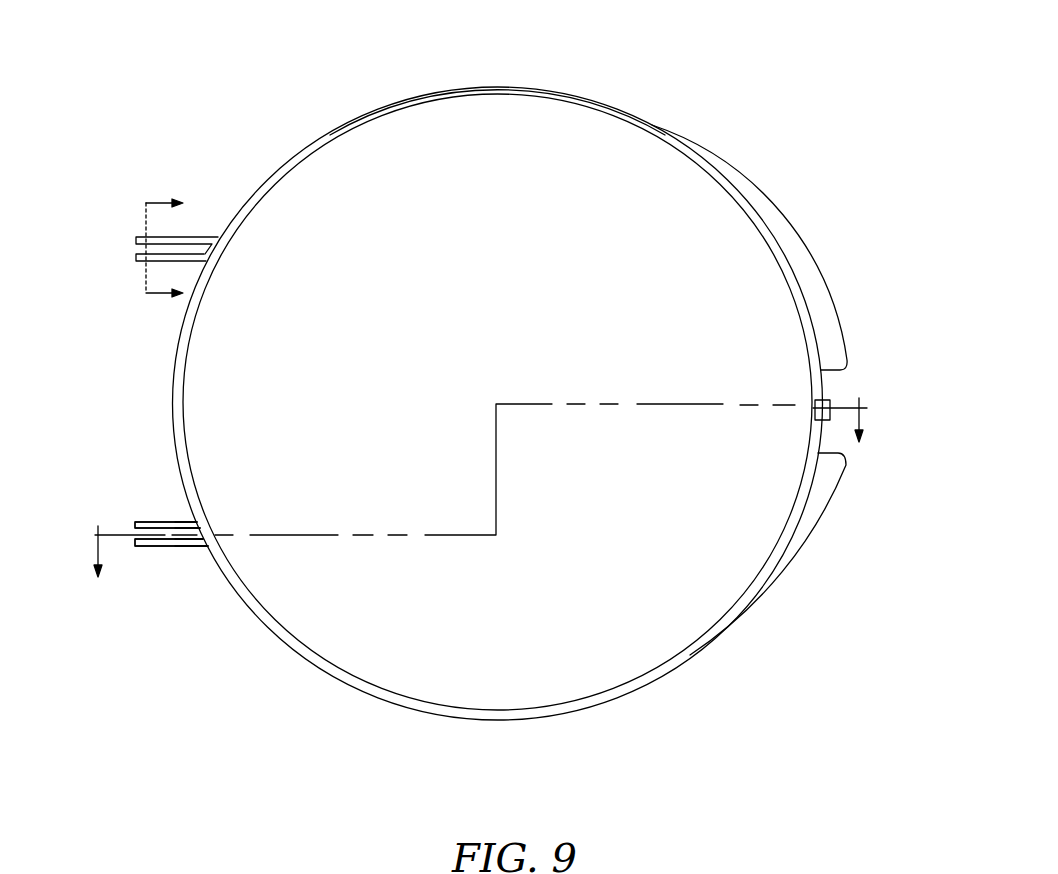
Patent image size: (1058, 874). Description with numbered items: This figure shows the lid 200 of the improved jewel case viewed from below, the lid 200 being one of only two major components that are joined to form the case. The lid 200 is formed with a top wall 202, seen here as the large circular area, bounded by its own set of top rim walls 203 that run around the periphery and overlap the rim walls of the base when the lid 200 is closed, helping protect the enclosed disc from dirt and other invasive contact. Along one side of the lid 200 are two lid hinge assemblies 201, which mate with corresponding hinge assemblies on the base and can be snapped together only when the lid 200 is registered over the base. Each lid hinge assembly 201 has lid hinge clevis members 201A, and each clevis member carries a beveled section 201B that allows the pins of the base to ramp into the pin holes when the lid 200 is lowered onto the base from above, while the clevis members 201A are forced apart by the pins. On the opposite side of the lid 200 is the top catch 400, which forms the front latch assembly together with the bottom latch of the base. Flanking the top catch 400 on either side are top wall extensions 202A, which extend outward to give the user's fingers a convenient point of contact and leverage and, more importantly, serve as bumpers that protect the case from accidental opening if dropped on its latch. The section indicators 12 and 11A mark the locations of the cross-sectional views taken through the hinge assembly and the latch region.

The lid 200 is at (714, 121).
The lid hinge assembly 201 is at (211, 217).
The lid hinge clevis member 201A is at (136, 527).
The beveled section 201B is at (147, 521).
The top wall 202 is at (632, 187).
The top wall extension 202A is at (812, 258).
The top rim wall 203 is at (497, 87).
The top catch 400 is at (830, 403).
The section line 12 is at (164, 248).
The section line 11A is at (482, 487).